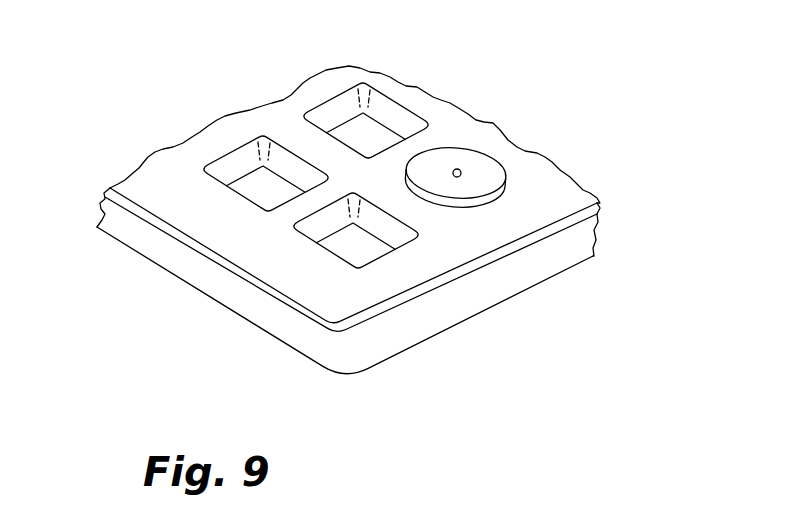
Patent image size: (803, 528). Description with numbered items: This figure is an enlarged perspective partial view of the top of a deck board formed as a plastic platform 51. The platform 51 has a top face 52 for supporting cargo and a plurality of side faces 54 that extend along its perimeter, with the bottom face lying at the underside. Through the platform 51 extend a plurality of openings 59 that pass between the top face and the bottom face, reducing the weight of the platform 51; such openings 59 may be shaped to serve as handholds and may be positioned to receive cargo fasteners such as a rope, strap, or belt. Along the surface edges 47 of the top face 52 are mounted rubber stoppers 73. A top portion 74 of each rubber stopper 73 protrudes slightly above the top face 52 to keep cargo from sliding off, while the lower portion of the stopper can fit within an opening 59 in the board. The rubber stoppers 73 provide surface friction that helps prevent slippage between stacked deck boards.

The surface edges 47 is at (377, 289).
The plastic platform 51 is at (131, 250).
The top face 52 is at (547, 195).
The side faces 54 is at (560, 252).
The openings 59 is at (365, 127).
The rubber stoppers 73 is at (478, 167).
The top portion 74 is at (473, 205).